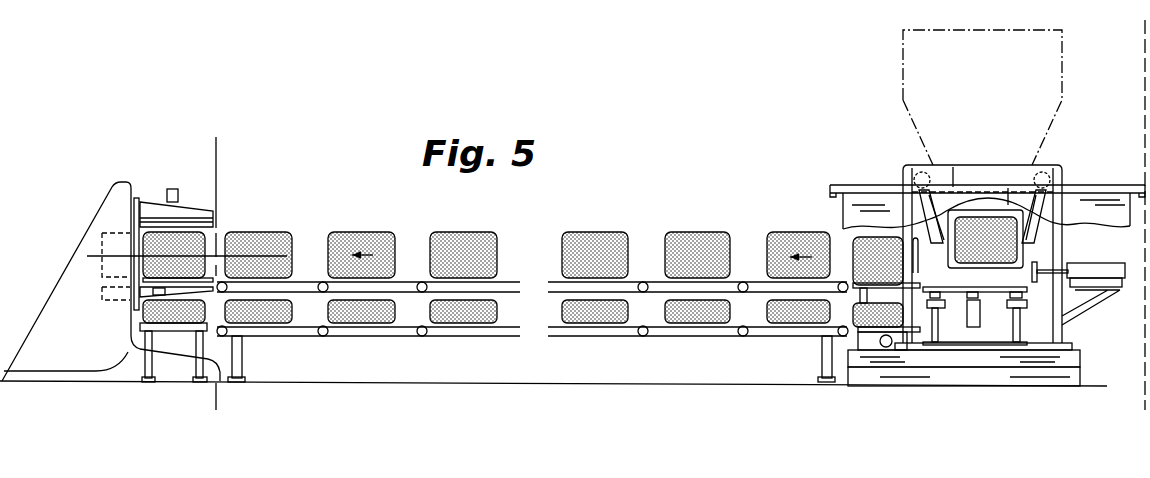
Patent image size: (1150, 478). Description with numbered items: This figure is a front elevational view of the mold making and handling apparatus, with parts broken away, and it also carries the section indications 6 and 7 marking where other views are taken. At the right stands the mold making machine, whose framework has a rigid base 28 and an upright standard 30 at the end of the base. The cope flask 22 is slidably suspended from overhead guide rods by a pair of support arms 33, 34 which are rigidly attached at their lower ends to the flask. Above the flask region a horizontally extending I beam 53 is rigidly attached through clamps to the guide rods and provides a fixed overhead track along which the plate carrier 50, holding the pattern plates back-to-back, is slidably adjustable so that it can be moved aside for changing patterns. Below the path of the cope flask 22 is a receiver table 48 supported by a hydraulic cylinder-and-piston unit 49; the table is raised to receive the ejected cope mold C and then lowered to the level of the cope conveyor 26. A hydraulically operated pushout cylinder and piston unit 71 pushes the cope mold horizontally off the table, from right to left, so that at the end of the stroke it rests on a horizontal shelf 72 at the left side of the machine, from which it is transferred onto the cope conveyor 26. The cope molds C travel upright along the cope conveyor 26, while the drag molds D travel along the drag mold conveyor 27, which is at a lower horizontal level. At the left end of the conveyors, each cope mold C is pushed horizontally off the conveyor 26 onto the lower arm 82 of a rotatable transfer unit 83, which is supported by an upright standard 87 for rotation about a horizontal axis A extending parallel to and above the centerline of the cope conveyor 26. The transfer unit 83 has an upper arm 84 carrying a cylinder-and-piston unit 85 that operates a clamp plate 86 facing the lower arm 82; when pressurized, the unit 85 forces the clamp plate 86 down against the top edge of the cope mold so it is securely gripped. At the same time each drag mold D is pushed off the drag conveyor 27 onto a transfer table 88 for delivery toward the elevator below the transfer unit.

The cope flask 22 is at (1047, 245).
The cope conveyor 26 is at (653, 280).
The drag mold conveyor 27 is at (660, 338).
The rigid base 28 is at (1072, 360).
The upright standard 30 is at (903, 173).
The support arm 33 is at (1042, 220).
The support arm 34 is at (927, 230).
The receiver table 48 is at (973, 288).
The hydraulic cylinder-and-piston unit 49 is at (980, 312).
The plate carrier 50 is at (843, 220).
The I beam 53 is at (837, 184).
The pushout cylinder and piston unit 71 is at (1107, 267).
The horizontal shelf 72 is at (918, 288).
The lower arm 82 is at (153, 288).
The rotatable transfer unit 83 is at (134, 238).
The upper arm 84 is at (213, 208).
The cylinder-and-piston unit 85 is at (173, 188).
The clamp plate 86 is at (217, 227).
The upright standard 87 is at (68, 285).
The transfer table 88 is at (143, 323).
The horizontal axis A is at (87, 255).
The cope mold C is at (181, 252).
The drag mold D is at (885, 322).
The section line 6- 6 is at (1145, 28).
The section line 7- 7 is at (216, 143).